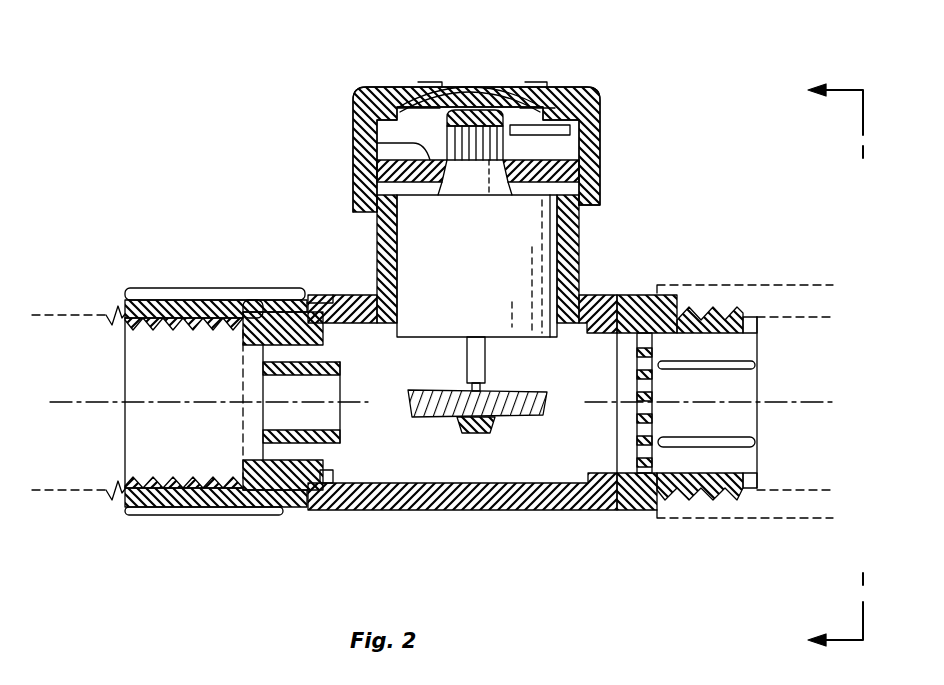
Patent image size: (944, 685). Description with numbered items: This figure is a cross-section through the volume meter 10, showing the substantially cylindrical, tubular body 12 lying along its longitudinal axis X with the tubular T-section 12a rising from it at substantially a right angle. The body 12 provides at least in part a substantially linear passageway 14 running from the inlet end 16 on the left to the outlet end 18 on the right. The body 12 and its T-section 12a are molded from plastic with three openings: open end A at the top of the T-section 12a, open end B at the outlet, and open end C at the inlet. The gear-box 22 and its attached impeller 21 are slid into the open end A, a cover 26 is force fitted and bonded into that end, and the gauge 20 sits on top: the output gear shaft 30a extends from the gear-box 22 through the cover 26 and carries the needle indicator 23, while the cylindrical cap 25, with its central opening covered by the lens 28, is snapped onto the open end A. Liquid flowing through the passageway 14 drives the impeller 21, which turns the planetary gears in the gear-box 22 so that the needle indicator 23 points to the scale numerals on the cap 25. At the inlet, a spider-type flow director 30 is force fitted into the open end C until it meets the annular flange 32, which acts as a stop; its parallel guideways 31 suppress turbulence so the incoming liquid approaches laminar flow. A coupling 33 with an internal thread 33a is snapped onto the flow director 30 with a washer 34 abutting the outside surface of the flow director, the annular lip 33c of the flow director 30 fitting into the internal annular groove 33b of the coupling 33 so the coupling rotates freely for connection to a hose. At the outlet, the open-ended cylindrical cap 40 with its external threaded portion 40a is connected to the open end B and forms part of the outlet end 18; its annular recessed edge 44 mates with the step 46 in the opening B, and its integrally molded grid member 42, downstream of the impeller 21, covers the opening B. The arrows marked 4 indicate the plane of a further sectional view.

The volume meter 10 is at (643, 101).
The tubular body 12 is at (350, 511).
The T-section 12a is at (376, 218).
The passageway 14 is at (563, 441).
The inlet end 16 is at (125, 306).
The outlet end 18 is at (760, 327).
The gauge 20 is at (603, 145).
The impeller 21 is at (533, 421).
The gear-box 22 is at (492, 278).
The needle indicator 23 is at (517, 127).
The cylindrical cap 25 is at (578, 86).
The cover 26 is at (377, 141).
The lens 28 is at (457, 88).
The flow director 30 is at (270, 318).
The output gear shaft 30a is at (486, 120).
The guideways 31 is at (332, 420).
The annular flange 32 is at (348, 322).
The coupling 33 is at (137, 295).
The internal thread 33a is at (177, 318).
The internal annular groove 33b is at (243, 317).
The annular lip 33c is at (298, 298).
The washer 34 is at (177, 307).
The cylindrical cap 40 is at (761, 488).
The external threaded portion 40a is at (722, 500).
The grid member 42 is at (652, 360).
The annular recessed edge 44 is at (620, 297).
The step 46 is at (650, 511).
The open end A is at (573, 183).
The open end B is at (627, 453).
The open end C is at (313, 450).
The longitudinal axis X is at (66, 405).
The section line 4- 4 is at (819, 368).